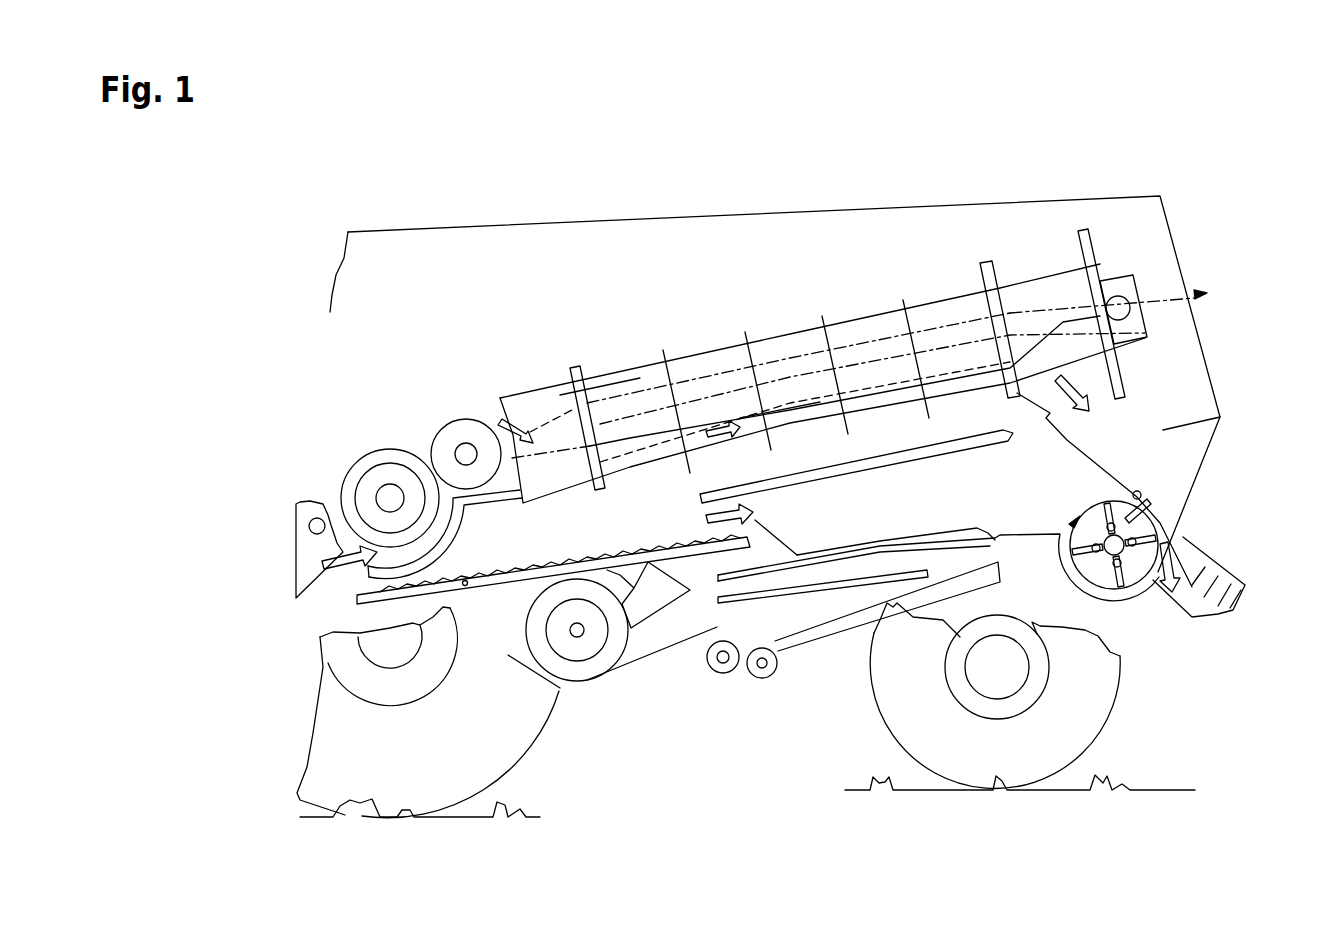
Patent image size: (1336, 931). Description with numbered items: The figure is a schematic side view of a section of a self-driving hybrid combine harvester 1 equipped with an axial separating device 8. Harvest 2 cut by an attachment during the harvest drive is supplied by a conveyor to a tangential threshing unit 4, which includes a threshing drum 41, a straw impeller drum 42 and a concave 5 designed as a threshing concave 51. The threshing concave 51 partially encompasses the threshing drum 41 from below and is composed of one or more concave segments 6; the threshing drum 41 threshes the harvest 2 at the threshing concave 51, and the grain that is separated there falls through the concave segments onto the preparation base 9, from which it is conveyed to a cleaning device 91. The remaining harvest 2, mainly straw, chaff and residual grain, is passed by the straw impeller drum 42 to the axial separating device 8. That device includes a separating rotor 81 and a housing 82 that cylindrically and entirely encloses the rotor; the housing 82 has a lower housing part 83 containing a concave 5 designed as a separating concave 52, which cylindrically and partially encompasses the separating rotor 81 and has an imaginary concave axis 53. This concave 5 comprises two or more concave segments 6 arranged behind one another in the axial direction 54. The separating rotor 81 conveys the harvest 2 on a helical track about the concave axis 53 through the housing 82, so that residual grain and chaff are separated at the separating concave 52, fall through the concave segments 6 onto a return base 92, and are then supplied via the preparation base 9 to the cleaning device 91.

The combine harvester 1 is at (326, 196).
The harvest 2 is at (512, 398).
The threshing unit 4 is at (367, 417).
The threshing drum 41 is at (372, 478).
The straw impeller drum 42 is at (452, 428).
The concave 5 is at (671, 452).
The threshing concave 51 is at (383, 588).
The separating concave 52 is at (683, 365).
The concave axis 53 is at (935, 350).
The axial direction 54 is at (1245, 309).
The concave segments 6 is at (627, 460).
The axial separating device 8 is at (585, 331).
The separating rotor 81 is at (775, 385).
The housing 82 is at (625, 383).
The lower housing part 83 is at (1163, 337).
The preparation base 9 is at (537, 585).
The cleaning device 91 is at (585, 655).
The return base 92 is at (847, 478).